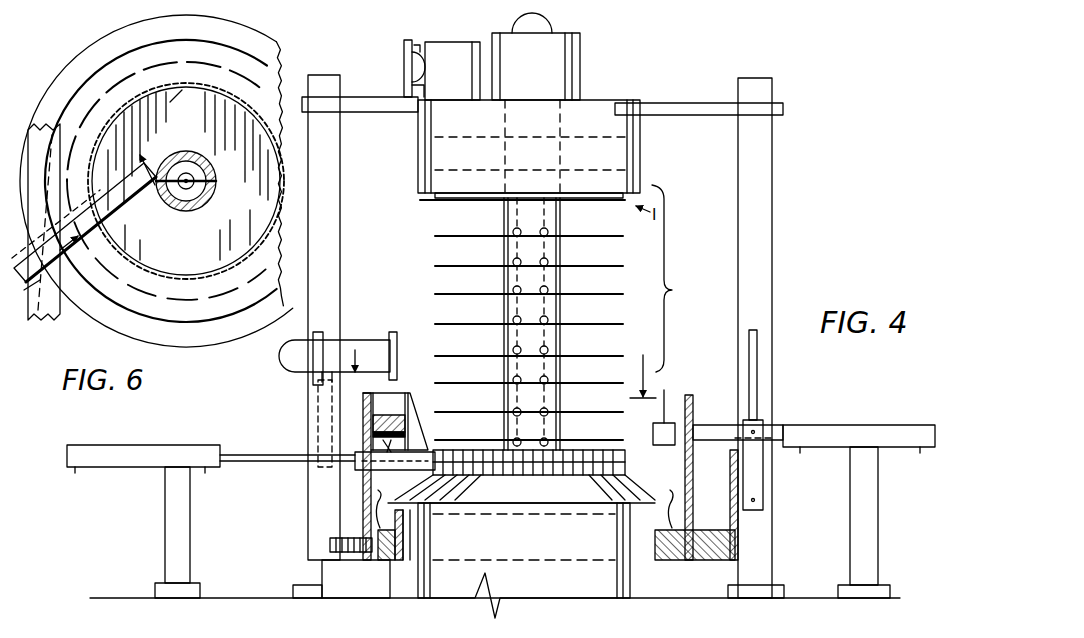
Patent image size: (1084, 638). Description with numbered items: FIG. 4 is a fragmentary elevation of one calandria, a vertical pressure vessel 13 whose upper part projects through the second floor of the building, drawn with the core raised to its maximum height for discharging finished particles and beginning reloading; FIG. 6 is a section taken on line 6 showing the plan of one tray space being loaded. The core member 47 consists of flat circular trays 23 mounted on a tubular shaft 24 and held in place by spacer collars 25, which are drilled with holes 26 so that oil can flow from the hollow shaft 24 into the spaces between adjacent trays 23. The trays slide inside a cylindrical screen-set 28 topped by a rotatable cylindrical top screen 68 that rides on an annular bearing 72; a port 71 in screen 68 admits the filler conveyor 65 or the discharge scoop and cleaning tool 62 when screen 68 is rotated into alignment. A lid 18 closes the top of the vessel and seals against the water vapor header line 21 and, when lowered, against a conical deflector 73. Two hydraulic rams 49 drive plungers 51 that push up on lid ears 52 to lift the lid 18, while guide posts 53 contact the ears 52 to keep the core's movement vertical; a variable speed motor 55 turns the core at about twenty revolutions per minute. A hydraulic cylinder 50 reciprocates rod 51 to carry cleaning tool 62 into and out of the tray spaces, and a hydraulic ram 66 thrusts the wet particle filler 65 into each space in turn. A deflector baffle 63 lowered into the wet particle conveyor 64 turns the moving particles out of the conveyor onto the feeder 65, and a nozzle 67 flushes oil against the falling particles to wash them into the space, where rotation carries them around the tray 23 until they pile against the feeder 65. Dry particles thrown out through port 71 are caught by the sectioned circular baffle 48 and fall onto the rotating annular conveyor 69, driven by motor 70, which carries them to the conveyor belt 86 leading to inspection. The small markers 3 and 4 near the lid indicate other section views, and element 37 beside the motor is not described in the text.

In FIG. 4, the section line 3 is at (372, 352).
In FIG. 4, the section indicator plate 4 is at (408, 22).
In FIG. 4, the section line 6 is at (502, 366).
In FIG. 4, the vertical pressure vessel 13 is at (524, 550).
In FIG. 4, the lid 18 is at (529, 149).
In FIG. 4, the water vapor header line 21 is at (338, 358).
In FIG. 6, the circular trays 23 is at (186, 181).
In FIG. 4, the circular trays 23 is at (420, 201).
In FIG. 6, the tubular shaft 24 is at (214, 168).
In FIG. 4, the tubular shaft 24 is at (506, 336).
In FIG. 6, the spacer collars 25 is at (210, 176).
In FIG. 4, the spacer collars 25 is at (562, 222).
In FIG. 6, the holes 26 is at (188, 158).
In FIG. 4, the holes 26 is at (548, 289).
In FIG. 4, the cylindrical screen-set 28 is at (542, 318).
In FIG. 4, the motor housing 37 is at (453, 44).
In FIG. 4, the core member 47 is at (681, 278).
In FIG. 6, the circular baffle 48 is at (220, 338).
In FIG. 4, the circular baffle 48 is at (693, 410).
In FIG. 4, the hydraulic rams 49 is at (766, 482).
In FIG. 4, the hydraulic cylinder 50 is at (866, 424).
In FIG. 4, the plunger rod 51 is at (782, 424).
In FIG. 4, the lid ears 52 is at (377, 112).
In FIG. 4, the guide posts 53 is at (340, 244).
In FIG. 4, the variable speed motor 55 is at (584, 48).
In FIG. 4, the discharge scoop and cleaning tool 62 is at (672, 400).
In FIG. 6, the deflector baffle 63 is at (38, 286).
In FIG. 4, the deflector baffle 63 is at (415, 411).
In FIG. 6, the wet particle conveyor 64 is at (62, 322).
In FIG. 4, the wet particle conveyor 64 is at (362, 430).
In FIG. 6, the filler conveyor 65 is at (140, 172).
In FIG. 4, the filler conveyor 65 is at (368, 484).
In FIG. 4, the hydraulic ram 66 is at (175, 446).
In FIG. 4, the nozzle 67 is at (392, 451).
In FIG. 6, the cylindrical top screen 68 is at (165, 106).
In FIG. 4, the cylindrical top screen 68 is at (504, 477).
In FIG. 6, the annular conveyor 69 is at (156, 181).
In FIG. 4, the annular conveyor 69 is at (524, 500).
In FIG. 4, the motor 70 is at (366, 554).
In FIG. 6, the port 71 is at (130, 230).
In FIG. 6, the annular bearing 72 is at (219, 288).
In FIG. 4, the annular bearing 72 is at (476, 478).
In FIG. 6, the conical deflector 73 is at (196, 52).
In FIG. 4, the conical deflector 73 is at (529, 476).
In FIG. 4, the conveyor belt 86 is at (710, 521).